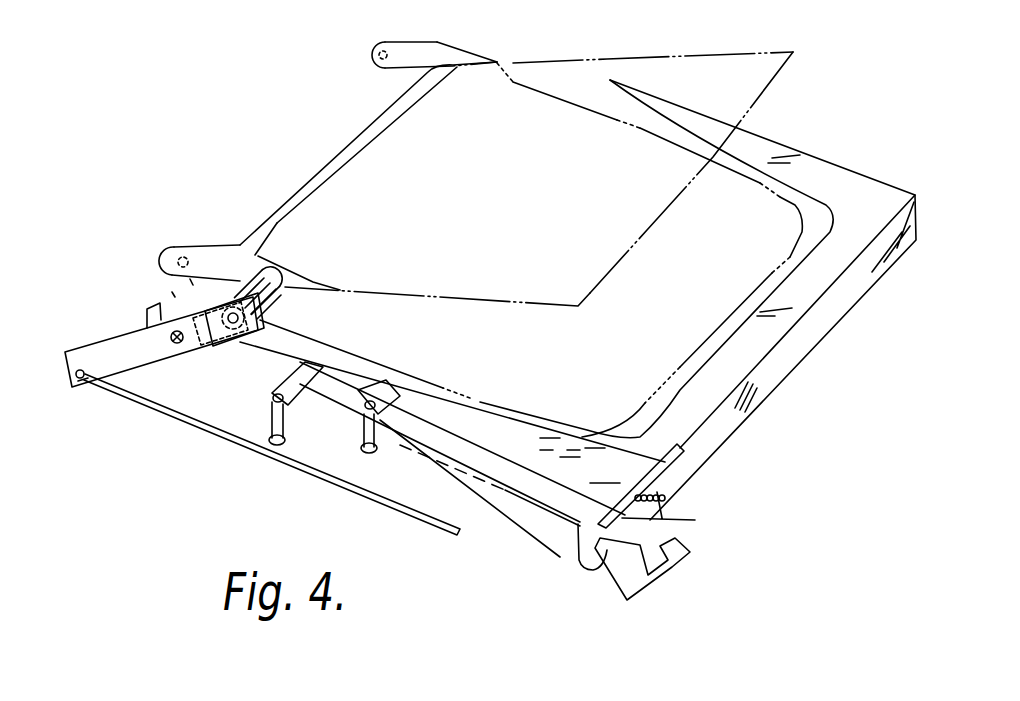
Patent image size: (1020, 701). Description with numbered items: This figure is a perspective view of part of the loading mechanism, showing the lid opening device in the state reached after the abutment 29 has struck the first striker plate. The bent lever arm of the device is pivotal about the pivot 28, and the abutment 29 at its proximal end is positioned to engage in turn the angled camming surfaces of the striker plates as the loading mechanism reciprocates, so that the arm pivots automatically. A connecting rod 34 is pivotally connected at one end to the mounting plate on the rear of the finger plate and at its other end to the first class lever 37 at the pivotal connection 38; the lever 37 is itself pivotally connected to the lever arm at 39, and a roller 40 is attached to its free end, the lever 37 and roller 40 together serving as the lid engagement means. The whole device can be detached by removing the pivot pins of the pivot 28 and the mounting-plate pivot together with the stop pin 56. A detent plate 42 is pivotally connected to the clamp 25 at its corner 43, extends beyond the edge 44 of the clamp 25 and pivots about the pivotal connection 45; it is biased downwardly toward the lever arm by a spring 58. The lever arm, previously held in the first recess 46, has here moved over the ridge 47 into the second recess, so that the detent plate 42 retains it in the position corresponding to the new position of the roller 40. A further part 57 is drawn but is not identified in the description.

The clamp 25 is at (475, 423).
The pivot 28 is at (367, 455).
The abutment 29 is at (673, 560).
The connecting rod 34 is at (294, 466).
The first class lever 37 is at (122, 343).
The pivotal connection of connecting rod to lever 38 is at (81, 386).
The pivotal connection of lever to lever arm 39 is at (157, 300).
The roller 40 is at (255, 277).
The detent plate 42 is at (662, 520).
The corner 43 is at (605, 468).
The edge 44 is at (538, 484).
The pivotal connection 45 is at (652, 463).
The first recess 46 is at (630, 587).
The ridge 47 is at (587, 573).
The stop pin 56 is at (268, 442).
The connecting rod 57 is at (604, 562).
The spring 58 is at (665, 498).